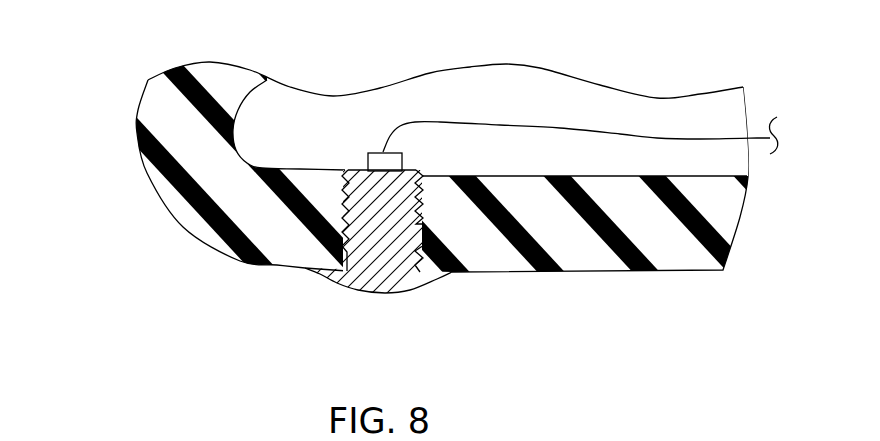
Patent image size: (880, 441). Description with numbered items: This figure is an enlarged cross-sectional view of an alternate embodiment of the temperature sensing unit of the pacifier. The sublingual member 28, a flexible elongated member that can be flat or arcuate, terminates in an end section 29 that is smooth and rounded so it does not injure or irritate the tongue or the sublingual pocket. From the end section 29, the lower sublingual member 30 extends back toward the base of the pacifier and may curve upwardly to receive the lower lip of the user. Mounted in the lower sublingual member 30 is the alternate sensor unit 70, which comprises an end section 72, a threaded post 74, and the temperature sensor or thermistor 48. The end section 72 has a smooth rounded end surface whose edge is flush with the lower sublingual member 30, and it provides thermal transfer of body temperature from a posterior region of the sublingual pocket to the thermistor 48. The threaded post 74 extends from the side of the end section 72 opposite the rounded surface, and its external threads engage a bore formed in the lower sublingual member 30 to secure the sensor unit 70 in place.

The sublingual member 28 is at (200, 62).
The end section 29 is at (137, 106).
The lower sublingual member 30 is at (688, 273).
The temperature sensor or thermistor 48 is at (383, 152).
The sensor unit 70 is at (323, 277).
The end section 72 is at (413, 282).
The threaded post 74 is at (418, 212).